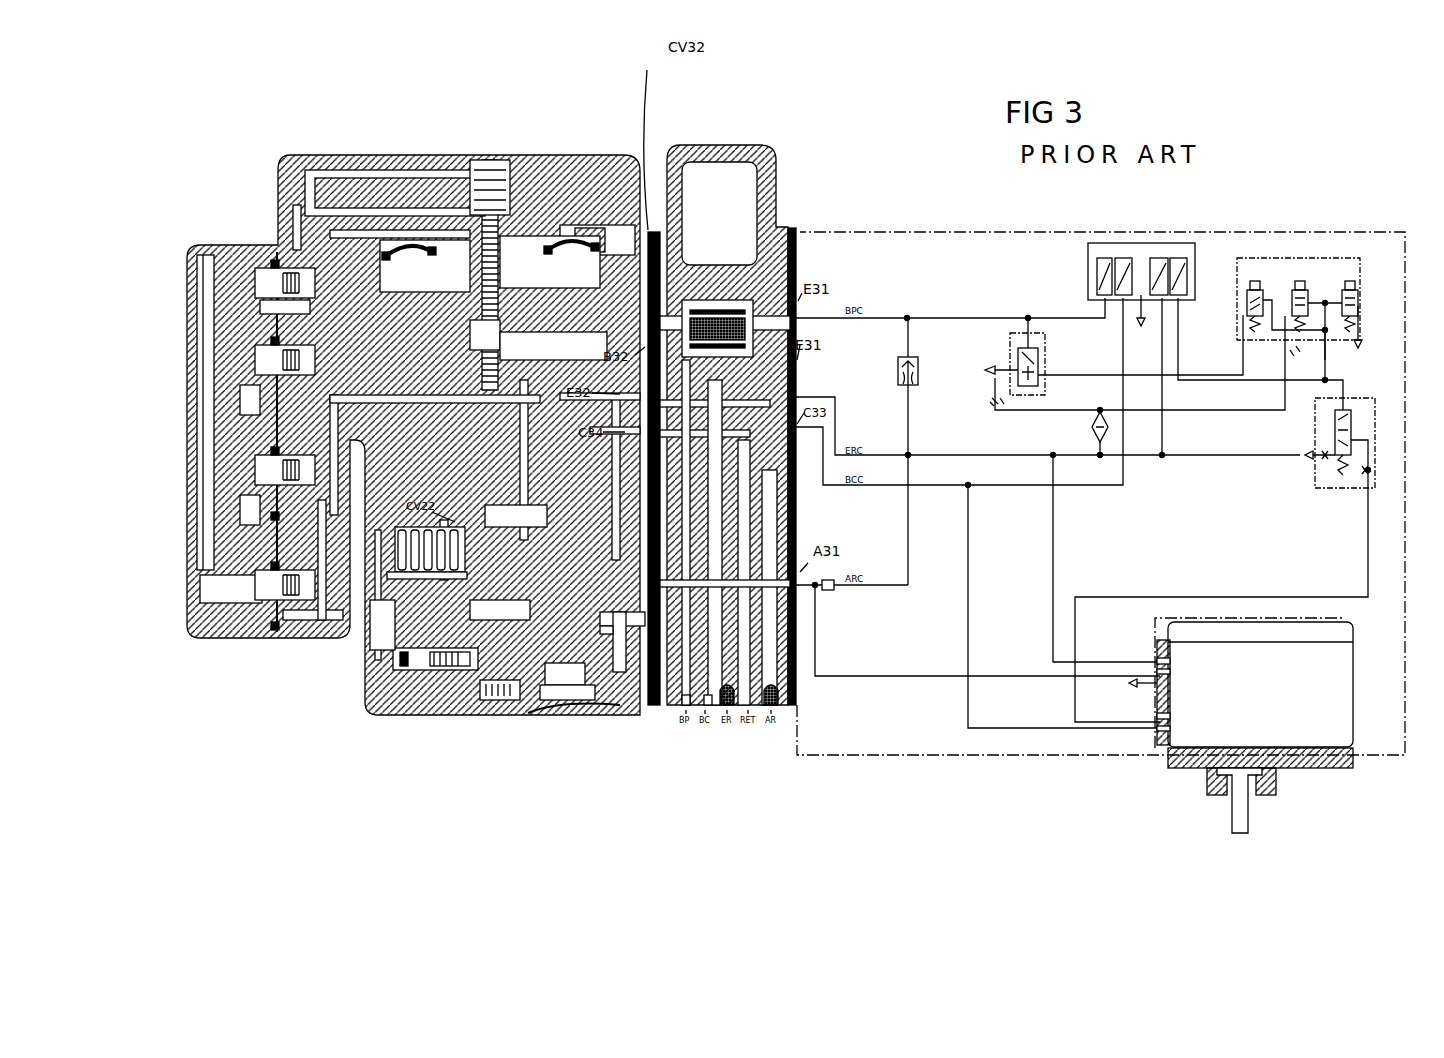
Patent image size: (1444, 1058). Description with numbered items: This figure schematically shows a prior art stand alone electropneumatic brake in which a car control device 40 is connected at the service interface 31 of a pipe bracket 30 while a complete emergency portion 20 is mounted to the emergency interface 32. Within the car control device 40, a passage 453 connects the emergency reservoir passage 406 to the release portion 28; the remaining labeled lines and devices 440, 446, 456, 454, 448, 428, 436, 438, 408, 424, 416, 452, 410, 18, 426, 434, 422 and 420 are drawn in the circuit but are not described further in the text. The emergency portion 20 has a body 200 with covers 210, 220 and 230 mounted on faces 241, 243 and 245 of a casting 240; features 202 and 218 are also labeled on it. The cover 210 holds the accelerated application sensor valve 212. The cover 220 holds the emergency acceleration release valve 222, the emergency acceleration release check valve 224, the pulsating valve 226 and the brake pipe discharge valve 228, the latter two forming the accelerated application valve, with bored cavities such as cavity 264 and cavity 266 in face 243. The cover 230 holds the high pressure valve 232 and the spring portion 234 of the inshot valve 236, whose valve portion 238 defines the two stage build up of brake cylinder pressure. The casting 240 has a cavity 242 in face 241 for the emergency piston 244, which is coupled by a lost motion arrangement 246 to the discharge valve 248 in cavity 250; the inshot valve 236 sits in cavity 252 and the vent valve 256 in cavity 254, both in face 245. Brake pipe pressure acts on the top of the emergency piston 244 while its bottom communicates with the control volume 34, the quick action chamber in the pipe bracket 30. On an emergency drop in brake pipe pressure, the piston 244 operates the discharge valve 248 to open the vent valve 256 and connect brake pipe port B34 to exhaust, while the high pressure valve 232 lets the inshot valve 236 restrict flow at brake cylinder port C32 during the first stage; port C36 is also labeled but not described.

The body 200 is at (260, 202).
The emergency portion 20 is at (565, 113).
The cavity 242 is at (376, 208).
The face 241 is at (302, 205).
The cover 210 is at (396, 150).
The sensor valve 212 is at (496, 165).
The cavity 250 is at (600, 225).
The emergency piston 244 is at (455, 260).
The lost motion arrangement 246 is at (520, 280).
The discharge valve 248 is at (473, 338).
The face 243 is at (262, 410).
The cover 220 is at (212, 636).
The emergency acceleration release valve 222 is at (265, 292).
The passage 202 is at (283, 270).
The emergency acceleration release check valve 224 is at (262, 373).
The cavity 264 is at (262, 400).
The pulsating valve 226 is at (262, 470).
The cavity 266 is at (262, 503).
The brake pipe discharge valve 228 is at (262, 582).
The passage 218 is at (280, 650).
The casting 240 is at (297, 650).
The high pressure valve 232 is at (447, 700).
The cavity 252 is at (516, 516).
The cover 230 is at (410, 715).
The spring portion 234 is at (360, 660).
The inshot valve 236 is at (400, 655).
The face 245 is at (380, 640).
The vent valve 256 is at (505, 730).
The cavity 254 is at (540, 727).
The valve portion 238 is at (573, 690).
The emergency interface 32 is at (662, 230).
The service interface 31 is at (797, 218).
The pipe bracket 30 is at (772, 145).
The control volume 34 is at (719, 213).
The brake pipe interface port B34 is at (628, 690).
The brake cylinder port C32 is at (686, 710).
The port C36 is at (705, 712).
The car control device 40 is at (979, 231).
The brake pipe control line 440 is at (949, 315).
The branch line 446 is at (902, 342).
The check valve CC 456 is at (897, 368).
The line 454 is at (897, 380).
The line 448 is at (910, 522).
The pressure operated valve POV 428 is at (1079, 374).
The line 436 is at (988, 386).
The choke 438 is at (988, 402).
The check valve 408 is at (1090, 424).
The supply line 424 is at (1204, 400).
The emergency reservoir passage 406 is at (1200, 458).
The brake cylinder control line 416 is at (972, 520).
The auxiliary reservoir line 452 is at (861, 672).
The passage 453 is at (1058, 524).
The brake cylinder line 410 is at (1208, 597).
The pressure sensing module PSM 18 is at (1180, 245).
The control valve unit CVU 426 is at (1266, 336).
The choke 434 is at (1288, 338).
The line 422 is at (1326, 355).
The brake cylinder relay valve 420 is at (1327, 388).
The release portion 28 is at (1362, 680).